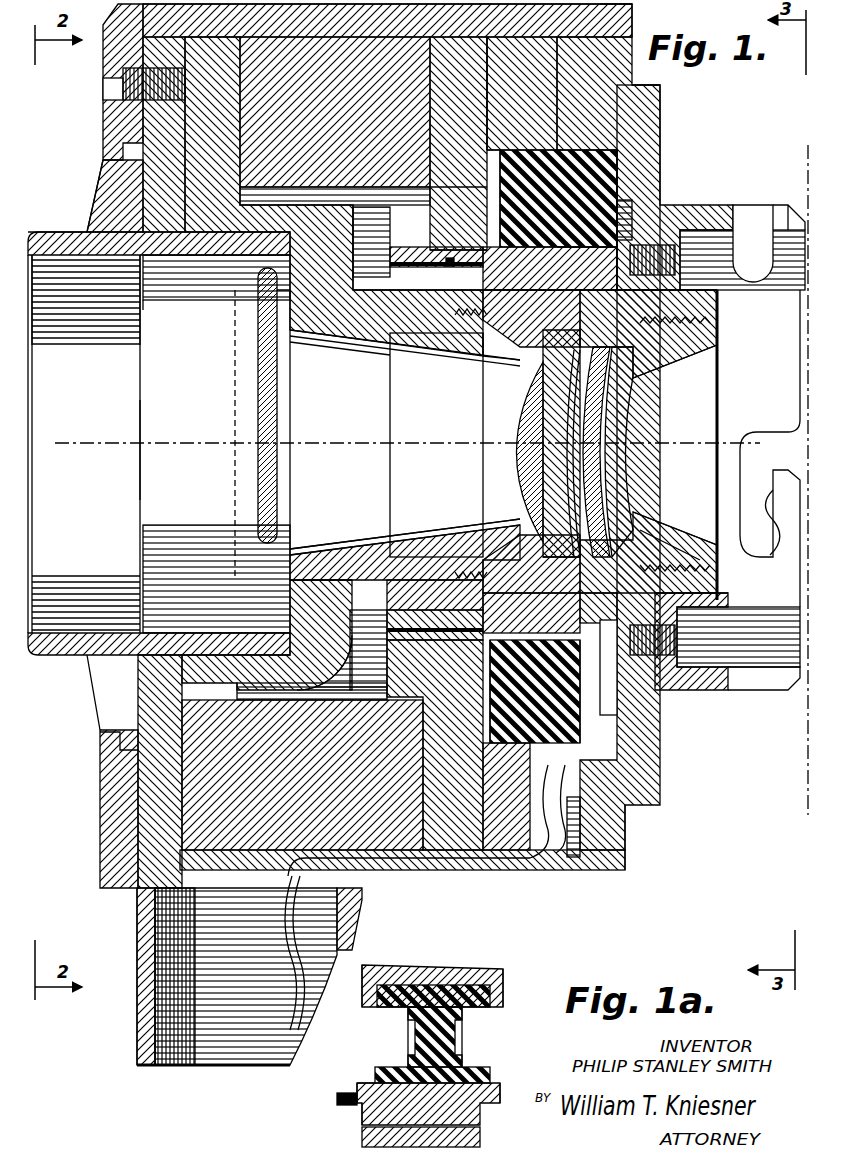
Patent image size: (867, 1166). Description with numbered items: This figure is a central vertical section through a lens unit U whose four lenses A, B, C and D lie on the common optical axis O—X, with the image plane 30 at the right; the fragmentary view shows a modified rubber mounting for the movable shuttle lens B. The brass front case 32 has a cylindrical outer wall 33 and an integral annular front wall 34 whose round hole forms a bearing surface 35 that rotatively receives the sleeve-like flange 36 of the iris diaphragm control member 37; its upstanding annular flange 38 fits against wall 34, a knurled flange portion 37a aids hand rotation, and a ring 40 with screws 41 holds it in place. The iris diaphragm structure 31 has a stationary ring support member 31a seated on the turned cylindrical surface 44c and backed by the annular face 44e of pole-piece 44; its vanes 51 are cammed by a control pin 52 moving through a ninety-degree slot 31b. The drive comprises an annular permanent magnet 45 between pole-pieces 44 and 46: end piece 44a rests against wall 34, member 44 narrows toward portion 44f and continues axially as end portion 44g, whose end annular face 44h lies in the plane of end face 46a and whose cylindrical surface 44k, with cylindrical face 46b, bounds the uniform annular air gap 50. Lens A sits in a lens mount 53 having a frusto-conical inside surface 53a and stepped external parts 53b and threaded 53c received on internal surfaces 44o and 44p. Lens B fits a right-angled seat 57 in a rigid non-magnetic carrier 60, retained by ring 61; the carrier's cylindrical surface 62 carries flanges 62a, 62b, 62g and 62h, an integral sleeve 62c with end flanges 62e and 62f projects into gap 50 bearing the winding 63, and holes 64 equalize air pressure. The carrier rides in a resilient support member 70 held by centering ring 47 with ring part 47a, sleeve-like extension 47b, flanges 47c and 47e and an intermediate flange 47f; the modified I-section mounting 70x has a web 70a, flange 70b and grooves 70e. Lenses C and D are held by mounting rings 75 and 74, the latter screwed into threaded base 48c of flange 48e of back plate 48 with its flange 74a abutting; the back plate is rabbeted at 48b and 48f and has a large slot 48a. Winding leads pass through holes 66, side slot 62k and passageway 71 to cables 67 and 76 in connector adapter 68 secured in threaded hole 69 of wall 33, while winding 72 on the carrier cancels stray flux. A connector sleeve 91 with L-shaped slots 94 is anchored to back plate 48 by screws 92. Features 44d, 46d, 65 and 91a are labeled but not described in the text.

In FIG. 1, the image plane 30 is at (804, 790).
In FIG. 1, the iris diaphragm structure 31 is at (137, 336).
In FIG. 1, the stationary ring support member 31a is at (110, 262).
In FIG. 1, the slot 31b is at (290, 426).
In FIG. 1, the casing 32 is at (470, 906).
In FIG. 1, the cylindrical outer wall 33 is at (387, 16).
In FIG. 1, the annular front wall 34 is at (164, 134).
In FIG. 1, the bearing surface 35 is at (140, 302).
In FIG. 1, the sleeve-like flange 36 is at (159, 443).
In FIG. 1, the iris diaphragm control member 37 is at (95, 190).
In FIG. 1, the projecting flange portion 37a is at (64, 238).
In FIG. 1, the upstanding annular flange 38 is at (134, 524).
In FIG. 1, the ring 40 is at (103, 138).
In FIG. 1, the screws 41 is at (123, 102).
In FIG. 1, the pole-piece 44 is at (334, 196).
In FIG. 1, the end piece 44a is at (205, 262).
In FIG. 1, the turned cylindrical surface 44c is at (170, 318).
In FIG. 1, the threaded portion 44d is at (335, 196).
In FIG. 1, the annular face 44e is at (282, 318).
In FIG. 1, the portion of pole-piece 44f is at (325, 247).
In FIG. 1, the end portion 44g is at (418, 302).
In FIG. 1, the end annular face 44h is at (512, 362).
In FIG. 1, the external cylindrical surface 44k is at (404, 342).
In FIG. 1, the internal stepped cylindrical surface 44o is at (425, 300).
In FIG. 1, the threaded internal surface 44p is at (478, 345).
In FIG. 1, the permanent magnet 45 is at (335, 112).
In FIG. 1, the pole-piece member 46 is at (458, 143).
In FIG. 1, the end face 46a is at (524, 198).
In FIG. 1, the cylindrical face 46b is at (514, 193).
In FIG. 1, the ring portion 46d is at (398, 195).
In FIG. 1, the centering ring 47 is at (522, 93).
In FIG. 1A, the centering ring 47 is at (420, 976).
In FIG. 1, the ring part 47a is at (510, 78).
In FIG. 1, the sleeve-like extension 47b is at (620, 135).
In FIG. 1, the flange 47c is at (625, 165).
In FIG. 1A, the flange 47c is at (504, 999).
In FIG. 1, the flange 47e is at (482, 152).
In FIG. 1A, the flange 47e is at (365, 1000).
In FIG. 1, the intermediate flange 47f is at (620, 755).
In FIG. 1, the back plate 48 is at (645, 163).
In FIG. 1, the slot 48a is at (640, 828).
In FIG. 1, the rabbet 48b is at (605, 28).
In FIG. 1, the threaded base 48c is at (720, 355).
In FIG. 1, the annular flange 48e is at (720, 308).
In FIG. 1, the annular external rabbet 48f is at (637, 78).
In FIG. 1, the annular air gap 50 is at (422, 256).
In FIG. 1, the vanes 51 is at (278, 386).
In FIG. 1, the control pin 52 is at (258, 300).
In FIG. 1, the lens mount 53 is at (468, 524).
In FIG. 1, the frusto-conical inside surface 53a is at (414, 542).
In FIG. 1, the external surface part 53b is at (342, 578).
In FIG. 1, the threaded part 53c is at (435, 606).
In FIG. 1, the right-angled annular seat 57 is at (561, 443).
In FIG. 1, the ring-shaped carrier 60 is at (599, 268).
In FIG. 1A, the ring-shaped carrier 60 is at (428, 1104).
In FIG. 1, the retaining ring 61 is at (561, 544).
In FIG. 1, the cylindrical surface 62 is at (535, 691).
In FIG. 1, the peripheral flange 62a is at (513, 691).
In FIG. 1, the peripheral flange 62b is at (585, 691).
In FIG. 1A, the peripheral flange 62b is at (482, 1130).
In FIG. 1, the cylindrical sleeve 62c is at (465, 345).
In FIG. 1A, the cylindrical sleeve 62c is at (358, 1124).
In FIG. 1, the upstanding flange 62e is at (365, 242).
In FIG. 1, the upstanding flange 62f is at (587, 236).
In FIG. 1A, the upstanding flange 62f is at (358, 1085).
In FIG. 1A, the flange 62g is at (377, 1101).
In FIG. 1A, the flange 62h is at (474, 1101).
In FIG. 1, the side slot 62k is at (655, 700).
In FIG. 1, the winding 63 is at (452, 256).
In FIG. 1A, the winding 63 is at (337, 1098).
In FIG. 1, the holes 64 is at (531, 441).
In FIG. 1, the recess 65 is at (367, 652).
In FIG. 1, the holes 66 is at (531, 613).
In FIG. 1, the two-conductor cable 67 is at (268, 914).
In FIG. 1, the connector adapter 68 is at (137, 1030).
In FIG. 1, the threaded hole 69 is at (137, 908).
In FIG. 1, the flexible annular support member 70 is at (558, 198).
In FIG. 1A, the web 70a is at (435, 1037).
In FIG. 1A, the flange 70b is at (495, 990).
In FIG. 1A, the annular grooves 70e is at (396, 1045).
In FIG. 1A, the rubber mounting 70x is at (467, 1036).
In FIG. 1, the hole 71 is at (522, 878).
In FIG. 1, the winding 72 is at (622, 212).
In FIG. 1A, the winding 72 is at (465, 1072).
In FIG. 1, the mounting ring 74 is at (702, 404).
In FIG. 1, the flange 74a is at (720, 323).
In FIG. 1, the second mounting ring 75 is at (645, 530).
In FIG. 1, the two-conductor cable 76 is at (331, 919).
In FIG. 1, the connector sleeve 91 is at (708, 692).
In FIG. 1, the flange face 91a is at (720, 600).
In FIG. 1, the screws 92 is at (685, 267).
In FIG. 1, the L-shaped slots 94 is at (758, 225).
In FIG. 1, the lens A is at (528, 452).
In FIG. 1, the shuttle lens B is at (565, 453).
In FIG. 1, the lens C is at (605, 470).
In FIG. 1, the lens D is at (622, 485).
In FIG. 1, the optical axis O is at (398, 444).
In FIG. 1, the lens unit U is at (95, 758).
In FIG. 1, the optical axis X is at (770, 448).